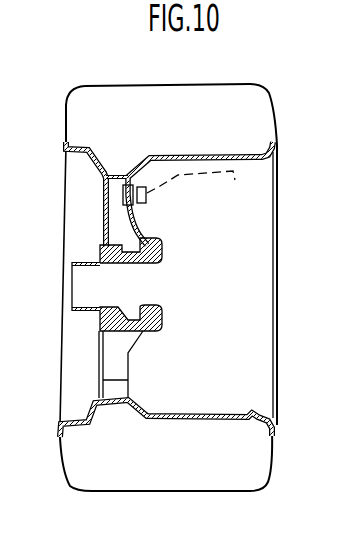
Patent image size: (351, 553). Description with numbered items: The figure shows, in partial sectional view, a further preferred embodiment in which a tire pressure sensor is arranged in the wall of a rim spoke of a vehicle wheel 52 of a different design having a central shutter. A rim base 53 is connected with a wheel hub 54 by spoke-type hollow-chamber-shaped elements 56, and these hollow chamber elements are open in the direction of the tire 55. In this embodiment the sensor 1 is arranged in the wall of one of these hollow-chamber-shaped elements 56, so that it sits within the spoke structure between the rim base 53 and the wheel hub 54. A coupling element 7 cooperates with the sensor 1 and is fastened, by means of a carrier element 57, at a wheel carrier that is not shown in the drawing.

The sensor 1 is at (134, 207).
The coupling element 7 is at (147, 197).
The vehicle wheel 52 is at (52, 180).
The rim base 53 is at (240, 141).
The wheel hub 54 is at (82, 318).
The tire 55 is at (63, 457).
The spoke-type hollow-chamber-shaped elements 56 is at (94, 220).
The carrier element 57 is at (235, 178).